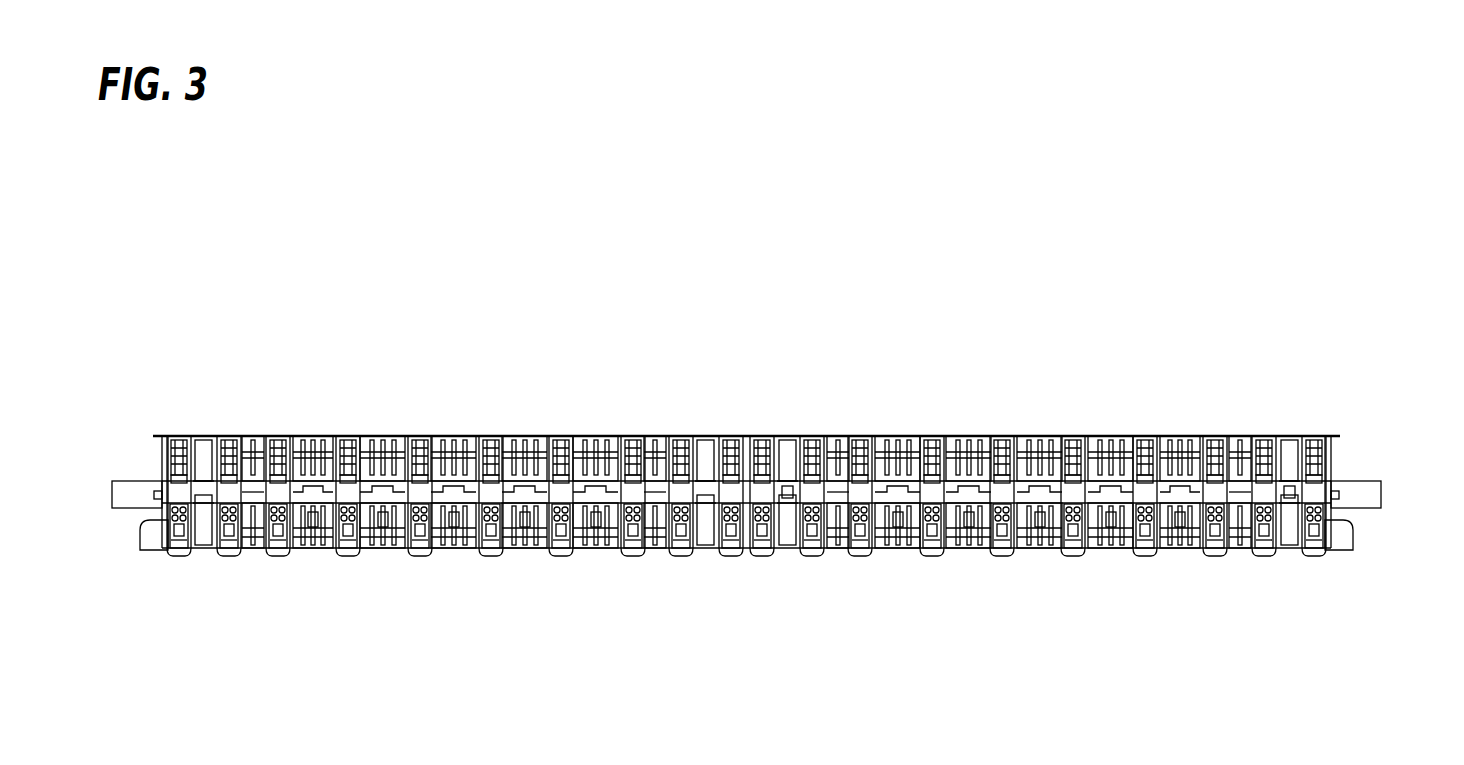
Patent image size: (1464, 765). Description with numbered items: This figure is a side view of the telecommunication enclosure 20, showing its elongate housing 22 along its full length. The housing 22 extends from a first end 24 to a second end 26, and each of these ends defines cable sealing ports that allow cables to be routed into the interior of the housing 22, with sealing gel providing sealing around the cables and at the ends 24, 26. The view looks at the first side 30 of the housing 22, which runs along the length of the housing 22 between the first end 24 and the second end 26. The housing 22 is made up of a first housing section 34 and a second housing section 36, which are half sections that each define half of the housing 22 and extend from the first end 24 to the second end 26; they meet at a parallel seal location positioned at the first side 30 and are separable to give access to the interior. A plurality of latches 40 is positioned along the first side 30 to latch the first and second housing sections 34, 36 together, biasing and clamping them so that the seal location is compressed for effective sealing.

The telecommunication enclosure 20 is at (911, 340).
The elongate housing 22 is at (860, 424).
The first end 24 is at (160, 512).
The second end 26 is at (1334, 459).
The first side 30 is at (597, 545).
The first housing section 34 is at (1063, 436).
The second housing section 36 is at (1110, 553).
The latches 40 is at (1005, 553).